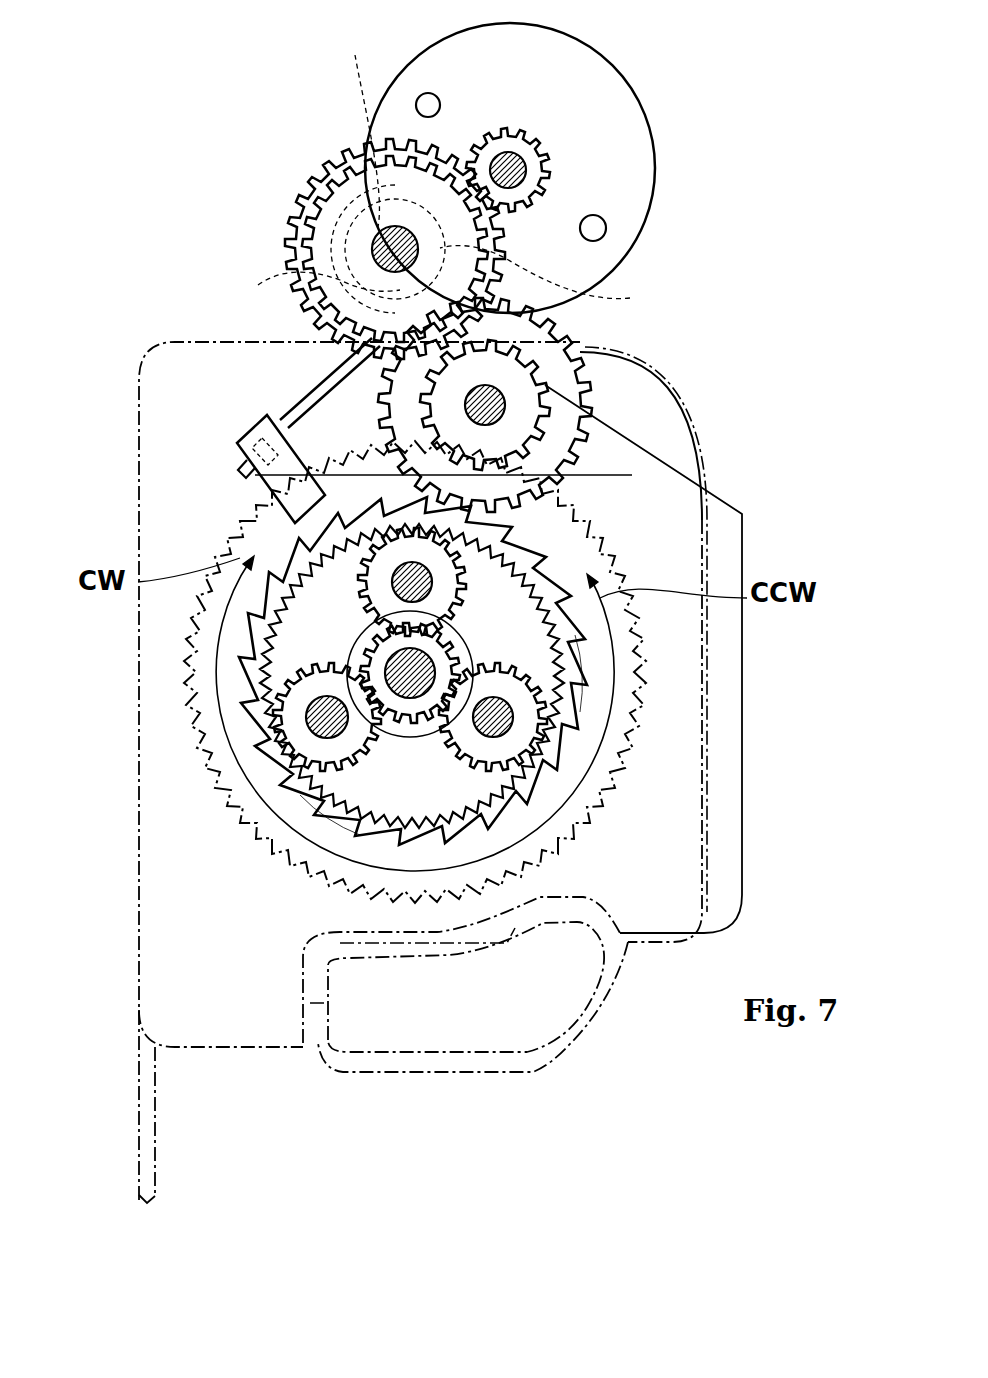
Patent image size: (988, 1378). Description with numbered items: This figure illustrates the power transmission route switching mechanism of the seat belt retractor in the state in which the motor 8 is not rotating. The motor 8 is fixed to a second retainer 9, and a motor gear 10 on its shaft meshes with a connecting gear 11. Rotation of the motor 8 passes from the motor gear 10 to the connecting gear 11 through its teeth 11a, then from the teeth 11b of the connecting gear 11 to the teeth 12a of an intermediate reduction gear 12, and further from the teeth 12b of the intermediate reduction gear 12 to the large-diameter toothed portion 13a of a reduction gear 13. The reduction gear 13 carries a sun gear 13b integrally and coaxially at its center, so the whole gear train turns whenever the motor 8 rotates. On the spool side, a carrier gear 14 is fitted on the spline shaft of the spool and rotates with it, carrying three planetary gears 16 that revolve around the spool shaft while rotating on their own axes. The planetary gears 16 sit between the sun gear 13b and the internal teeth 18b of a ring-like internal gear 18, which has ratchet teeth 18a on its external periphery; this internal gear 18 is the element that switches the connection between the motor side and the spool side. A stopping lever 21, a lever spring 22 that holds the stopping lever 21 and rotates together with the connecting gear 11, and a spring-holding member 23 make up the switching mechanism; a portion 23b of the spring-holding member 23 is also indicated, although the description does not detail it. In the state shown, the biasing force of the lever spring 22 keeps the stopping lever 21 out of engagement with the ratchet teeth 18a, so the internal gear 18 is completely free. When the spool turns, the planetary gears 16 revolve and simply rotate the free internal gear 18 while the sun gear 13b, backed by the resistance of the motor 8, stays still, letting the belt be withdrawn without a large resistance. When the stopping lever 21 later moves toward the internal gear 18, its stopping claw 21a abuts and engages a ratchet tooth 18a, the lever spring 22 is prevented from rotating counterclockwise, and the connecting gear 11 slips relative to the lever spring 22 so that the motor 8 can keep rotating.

The motor 8 is at (622, 162).
The second retainer 9 is at (148, 388).
The motor gear 10 is at (540, 180).
The connecting gear 11 is at (290, 86).
The teeth of the connecting gear 11a is at (355, 145).
The teeth of the connecting gear 11b is at (316, 189).
The intermediate reduction gear 12 is at (740, 337).
The teeth of the intermediate reduction gear 12a is at (600, 350).
The teeth of the intermediate reduction gear 12b is at (575, 408).
The reduction gear 13 is at (622, 610).
The large-diameter toothed portion 13a is at (613, 582).
The sun gear 13b is at (335, 626).
The carrier gear 14 is at (330, 657).
The planetary gears 16 is at (365, 598).
The internal gear 18 is at (300, 860).
The ratchet teeth 18a is at (600, 663).
The internal teeth 18b is at (335, 850).
The stopping lever 21 is at (275, 474).
The stopping claw 21a is at (268, 530).
The lever spring 22 is at (307, 400).
The spring-holding member 23 is at (372, 250).
The cam path 23b is at (463, 170).